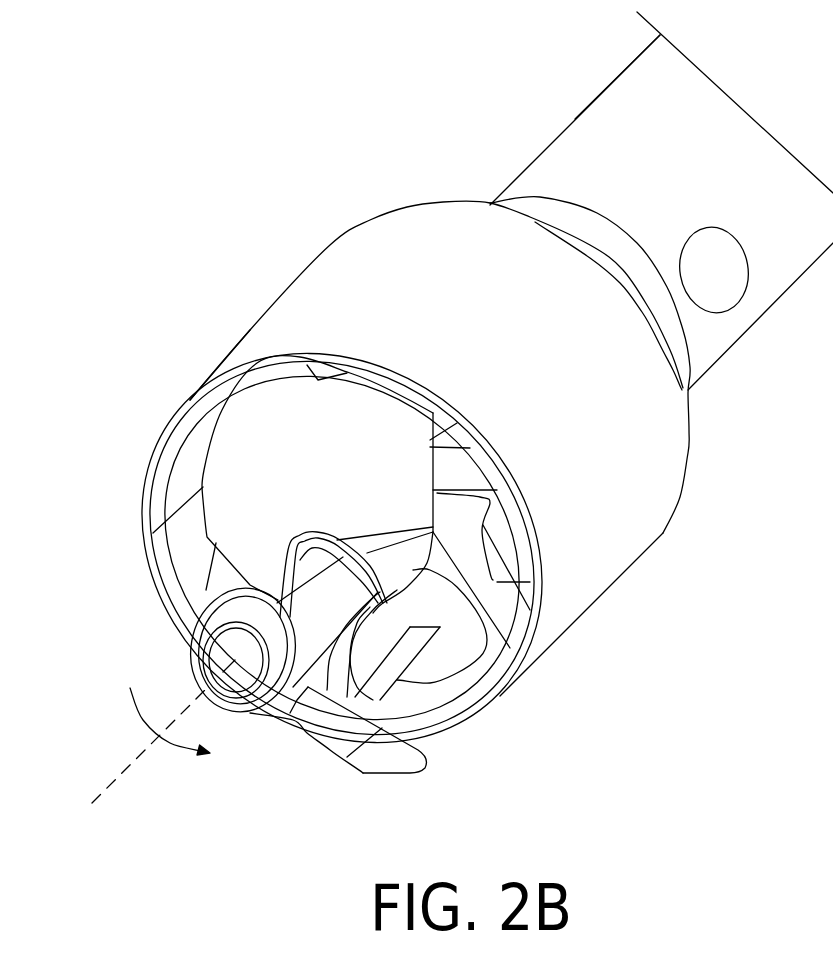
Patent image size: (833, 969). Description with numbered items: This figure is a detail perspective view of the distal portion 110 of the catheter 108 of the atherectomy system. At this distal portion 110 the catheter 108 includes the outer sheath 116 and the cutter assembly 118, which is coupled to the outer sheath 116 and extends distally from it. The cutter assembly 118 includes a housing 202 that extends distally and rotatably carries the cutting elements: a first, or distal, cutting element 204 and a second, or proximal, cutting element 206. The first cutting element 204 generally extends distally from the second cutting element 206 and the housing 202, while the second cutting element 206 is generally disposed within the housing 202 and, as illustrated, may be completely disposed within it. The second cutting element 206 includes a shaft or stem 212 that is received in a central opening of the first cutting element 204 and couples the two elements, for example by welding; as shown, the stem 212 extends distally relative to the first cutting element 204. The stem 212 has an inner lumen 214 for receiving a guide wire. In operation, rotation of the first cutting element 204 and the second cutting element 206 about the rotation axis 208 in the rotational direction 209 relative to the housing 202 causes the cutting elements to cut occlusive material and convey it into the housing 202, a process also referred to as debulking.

The distal portion 110 is at (244, 144).
The catheter 108 is at (552, 137).
The outer sheath 116 is at (592, 100).
The housing 202 is at (330, 245).
The cutter assembly 118 is at (267, 310).
The first cutting element 204 is at (155, 462).
The second cutting element 206 is at (517, 677).
The stem 212 is at (197, 668).
The inner lumen 214 is at (230, 700).
The rotation axis 208 is at (122, 763).
The rotational direction 209 is at (173, 750).